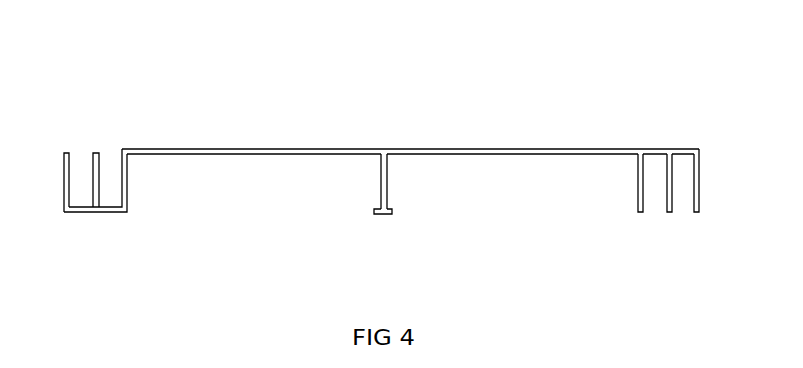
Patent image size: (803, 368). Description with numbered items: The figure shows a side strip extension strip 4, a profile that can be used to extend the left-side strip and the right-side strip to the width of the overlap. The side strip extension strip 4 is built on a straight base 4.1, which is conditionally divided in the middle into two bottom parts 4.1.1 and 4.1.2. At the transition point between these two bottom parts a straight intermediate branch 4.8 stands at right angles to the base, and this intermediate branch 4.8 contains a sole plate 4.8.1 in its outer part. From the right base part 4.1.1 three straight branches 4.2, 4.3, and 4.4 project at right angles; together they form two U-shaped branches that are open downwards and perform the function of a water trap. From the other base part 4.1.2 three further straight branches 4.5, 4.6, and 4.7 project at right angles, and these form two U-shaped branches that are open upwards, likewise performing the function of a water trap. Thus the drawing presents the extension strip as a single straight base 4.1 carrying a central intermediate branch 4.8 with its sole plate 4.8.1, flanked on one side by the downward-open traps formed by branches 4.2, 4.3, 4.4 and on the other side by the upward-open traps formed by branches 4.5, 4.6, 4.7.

The side strip extension strip 4 is at (160, 102).
The straight base 4.1 is at (382, 149).
The right base part 4.1.1 is at (546, 149).
The base part 4.1.2 is at (244, 149).
The straight branch 4.2 is at (697, 212).
The straight branch 4.3 is at (669, 212).
The straight branch 4.4 is at (640, 212).
The straight branch 4.5 is at (65, 153).
The straight branch 4.6 is at (97, 153).
The straight branch 4.7 is at (127, 200).
The straight intermediate branch 4.8 is at (380, 178).
The sole plate 4.8.1 is at (383, 214).